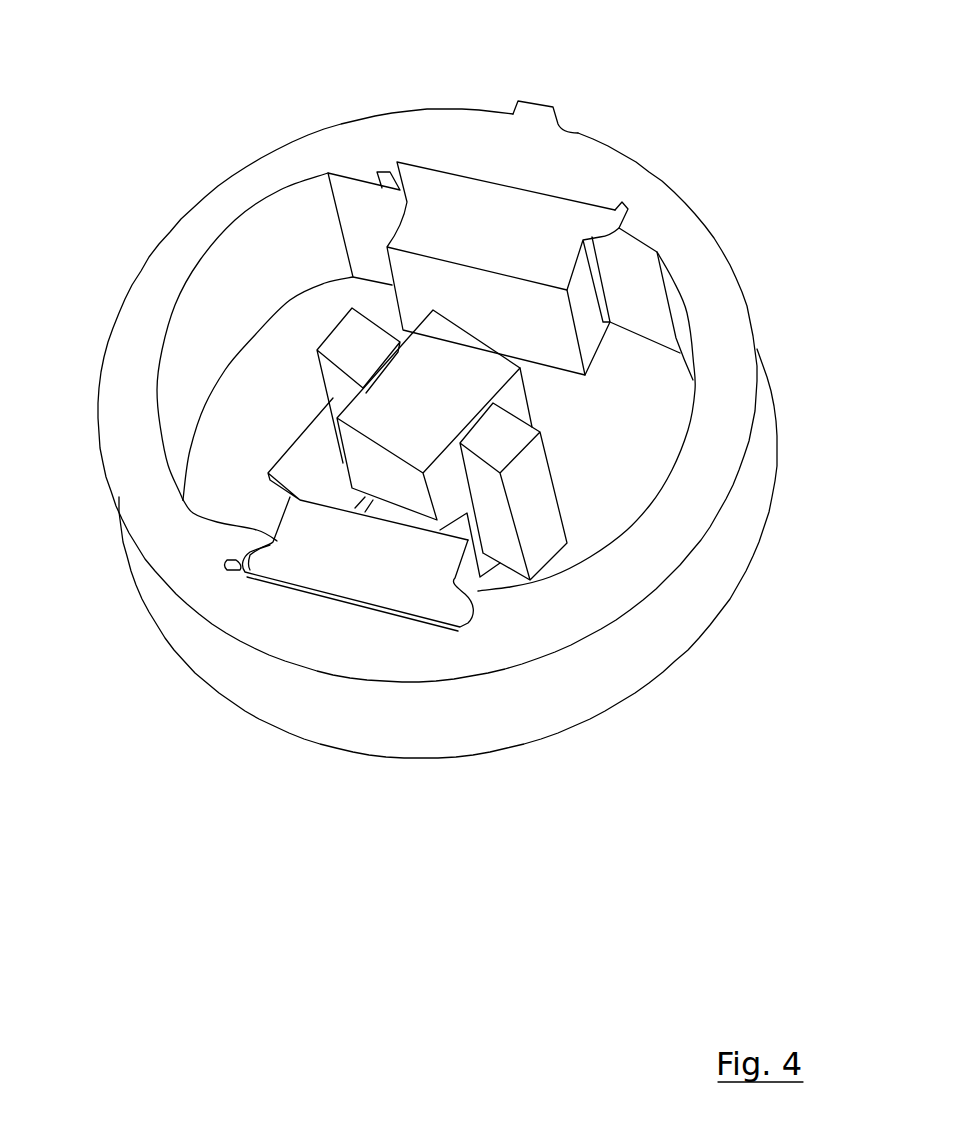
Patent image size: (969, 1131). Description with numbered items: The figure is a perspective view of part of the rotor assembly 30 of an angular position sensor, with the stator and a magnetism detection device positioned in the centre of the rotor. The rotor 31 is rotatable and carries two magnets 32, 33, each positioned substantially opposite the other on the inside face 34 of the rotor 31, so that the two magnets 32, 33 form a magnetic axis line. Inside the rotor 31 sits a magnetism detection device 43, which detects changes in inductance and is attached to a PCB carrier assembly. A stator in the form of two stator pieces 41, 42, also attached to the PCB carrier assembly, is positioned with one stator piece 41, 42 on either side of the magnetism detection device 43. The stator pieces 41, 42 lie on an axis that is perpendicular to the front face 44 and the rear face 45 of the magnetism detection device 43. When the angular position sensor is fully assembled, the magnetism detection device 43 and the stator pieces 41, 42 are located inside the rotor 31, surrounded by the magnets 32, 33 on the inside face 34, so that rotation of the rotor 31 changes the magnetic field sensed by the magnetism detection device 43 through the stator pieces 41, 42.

The rotor assembly 30 is at (680, 160).
The rotor 31 is at (378, 141).
The magnet 32 is at (350, 562).
The magnet 33 is at (533, 317).
The inside face 34 is at (257, 303).
The stator piece 41 is at (317, 377).
The stator piece 42 is at (537, 490).
The magnetism detection device 43 is at (430, 398).
The front face 44 is at (330, 400).
The rear face 45 is at (517, 400).